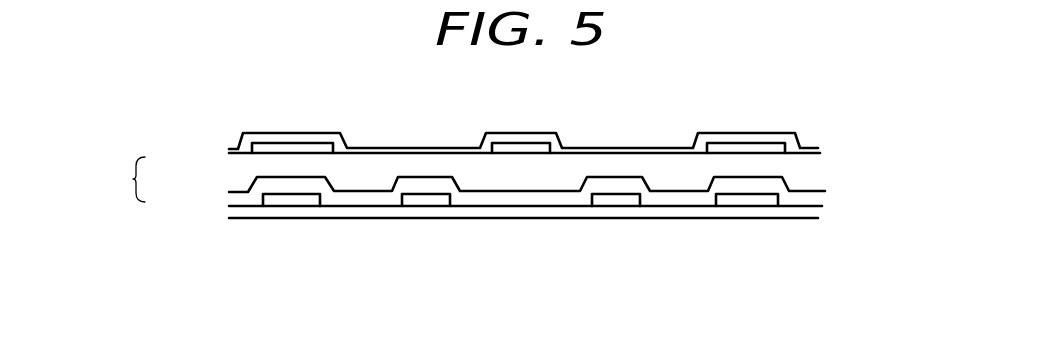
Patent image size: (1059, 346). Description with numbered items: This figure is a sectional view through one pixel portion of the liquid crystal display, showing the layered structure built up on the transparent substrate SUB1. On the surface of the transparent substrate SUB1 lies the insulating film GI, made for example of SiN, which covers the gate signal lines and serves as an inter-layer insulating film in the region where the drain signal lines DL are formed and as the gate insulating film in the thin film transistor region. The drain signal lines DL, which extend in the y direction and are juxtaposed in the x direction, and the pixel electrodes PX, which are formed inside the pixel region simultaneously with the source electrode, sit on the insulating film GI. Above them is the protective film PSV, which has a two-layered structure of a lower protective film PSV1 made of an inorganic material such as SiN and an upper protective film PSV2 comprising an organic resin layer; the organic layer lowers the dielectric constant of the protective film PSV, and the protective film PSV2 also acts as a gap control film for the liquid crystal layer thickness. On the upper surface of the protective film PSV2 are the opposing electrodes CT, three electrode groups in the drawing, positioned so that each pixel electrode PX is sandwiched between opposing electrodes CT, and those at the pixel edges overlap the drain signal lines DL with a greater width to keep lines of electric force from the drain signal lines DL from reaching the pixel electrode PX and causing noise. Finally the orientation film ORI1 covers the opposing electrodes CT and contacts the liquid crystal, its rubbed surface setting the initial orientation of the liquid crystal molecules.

The protective film PSV is at (116, 179).
The protective film PSV1 is at (240, 198).
The protective film PSV2 is at (240, 173).
The orientation film ORI1 is at (382, 148).
The opposing electrode CT is at (275, 142).
The pixel electrode PX is at (432, 193).
The drain signal line DL is at (308, 193).
The insulating film GI is at (812, 212).
The transparent substrate SUB1 is at (250, 304).